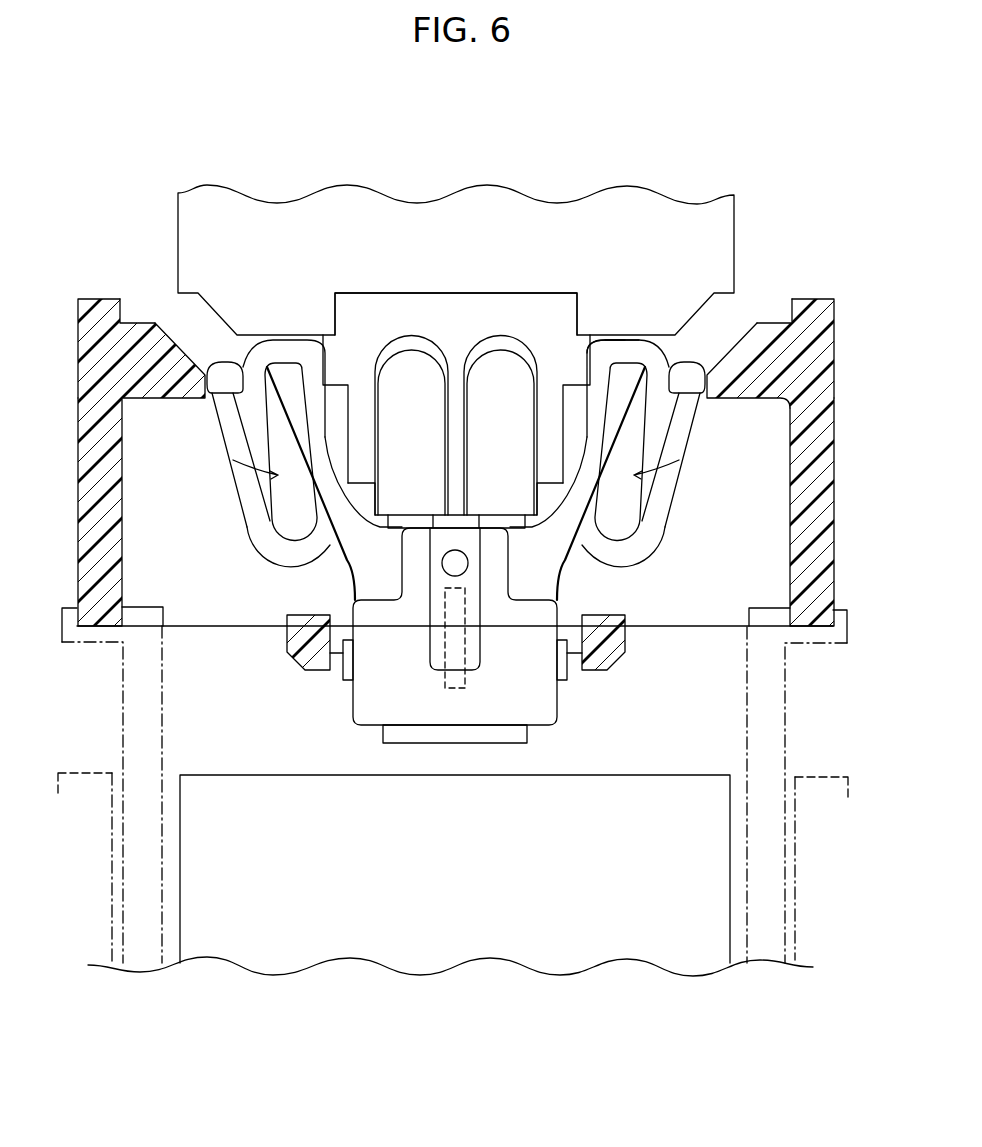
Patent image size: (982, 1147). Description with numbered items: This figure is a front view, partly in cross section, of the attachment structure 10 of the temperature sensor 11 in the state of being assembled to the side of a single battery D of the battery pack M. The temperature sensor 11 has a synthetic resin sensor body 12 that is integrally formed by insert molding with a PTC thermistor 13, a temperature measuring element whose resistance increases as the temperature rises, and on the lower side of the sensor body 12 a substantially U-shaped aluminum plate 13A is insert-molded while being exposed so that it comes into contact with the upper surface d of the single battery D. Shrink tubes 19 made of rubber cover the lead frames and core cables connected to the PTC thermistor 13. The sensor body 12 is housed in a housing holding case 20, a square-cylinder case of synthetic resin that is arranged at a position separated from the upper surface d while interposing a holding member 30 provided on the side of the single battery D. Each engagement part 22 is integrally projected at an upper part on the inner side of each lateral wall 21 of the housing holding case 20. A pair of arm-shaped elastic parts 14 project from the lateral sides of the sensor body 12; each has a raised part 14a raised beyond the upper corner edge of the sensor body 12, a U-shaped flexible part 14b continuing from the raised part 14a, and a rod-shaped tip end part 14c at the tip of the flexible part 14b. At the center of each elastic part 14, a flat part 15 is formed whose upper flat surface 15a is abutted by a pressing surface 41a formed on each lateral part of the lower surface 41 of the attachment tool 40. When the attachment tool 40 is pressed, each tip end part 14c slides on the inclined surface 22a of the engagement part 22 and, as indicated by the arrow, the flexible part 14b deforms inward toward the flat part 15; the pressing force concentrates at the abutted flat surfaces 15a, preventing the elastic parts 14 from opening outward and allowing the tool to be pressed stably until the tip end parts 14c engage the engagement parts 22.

The attachment structure 10 is at (349, 339).
The temperature sensor 11 is at (462, 655).
The sensor body 12 is at (343, 701).
The PTC thermistor 13 is at (455, 688).
The aluminum plate 13A is at (503, 743).
The elastic part 14 is at (456, 372).
The raised part 14a is at (345, 537).
The flexible part 14b is at (240, 505).
The tip end part 14c is at (222, 386).
The flat part 15 is at (647, 328).
The flat surface 15a is at (620, 340).
The shrink tube 19 is at (412, 340).
The housing holding case 20 is at (491, 400).
The lateral wall 21 is at (90, 492).
The engagement part 22 is at (457, 329).
The inclined surface 22a is at (155, 322).
The holding member 30 is at (787, 688).
The attachment tool 40 is at (748, 220).
The lower surface 41 is at (456, 339).
The pressing surface 41a is at (338, 347).
The battery pack M is at (103, 730).
The single battery D is at (77, 772).
The upper surface d is at (693, 777).